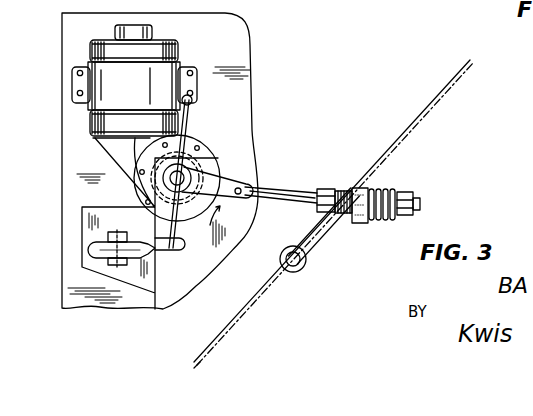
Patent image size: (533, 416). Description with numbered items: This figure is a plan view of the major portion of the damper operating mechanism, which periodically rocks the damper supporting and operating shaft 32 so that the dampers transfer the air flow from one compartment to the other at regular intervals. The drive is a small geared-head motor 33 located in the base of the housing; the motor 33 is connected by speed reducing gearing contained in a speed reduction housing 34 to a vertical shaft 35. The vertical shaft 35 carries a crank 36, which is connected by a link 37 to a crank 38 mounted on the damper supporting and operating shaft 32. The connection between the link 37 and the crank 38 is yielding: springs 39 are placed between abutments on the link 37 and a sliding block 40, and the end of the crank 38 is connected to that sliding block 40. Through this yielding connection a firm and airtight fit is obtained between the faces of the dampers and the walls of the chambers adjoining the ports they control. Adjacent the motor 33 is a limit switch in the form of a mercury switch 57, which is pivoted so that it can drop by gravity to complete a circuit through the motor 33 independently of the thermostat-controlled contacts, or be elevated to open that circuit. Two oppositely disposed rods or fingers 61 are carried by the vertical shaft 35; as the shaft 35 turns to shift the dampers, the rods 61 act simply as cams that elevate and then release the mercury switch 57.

The damper supporting and operating shaft 32 is at (306, 262).
The geared-head motor 33 is at (173, 52).
The speed reduction housing 34 is at (217, 136).
The vertical shaft 35 is at (177, 178).
The crank 36 is at (243, 178).
The link 37 is at (291, 190).
The crank 38 is at (335, 224).
The springs 39 is at (408, 191).
The sliding block 40 is at (358, 189).
The mercury switch 57 is at (92, 250).
The rods or fingers 61 is at (191, 111).